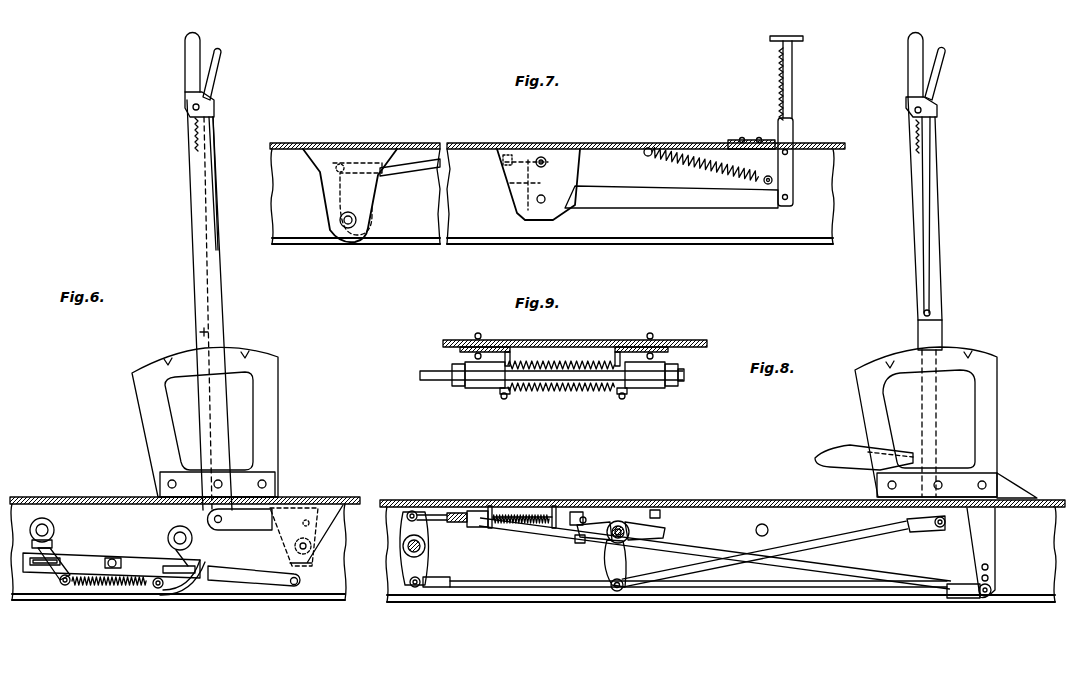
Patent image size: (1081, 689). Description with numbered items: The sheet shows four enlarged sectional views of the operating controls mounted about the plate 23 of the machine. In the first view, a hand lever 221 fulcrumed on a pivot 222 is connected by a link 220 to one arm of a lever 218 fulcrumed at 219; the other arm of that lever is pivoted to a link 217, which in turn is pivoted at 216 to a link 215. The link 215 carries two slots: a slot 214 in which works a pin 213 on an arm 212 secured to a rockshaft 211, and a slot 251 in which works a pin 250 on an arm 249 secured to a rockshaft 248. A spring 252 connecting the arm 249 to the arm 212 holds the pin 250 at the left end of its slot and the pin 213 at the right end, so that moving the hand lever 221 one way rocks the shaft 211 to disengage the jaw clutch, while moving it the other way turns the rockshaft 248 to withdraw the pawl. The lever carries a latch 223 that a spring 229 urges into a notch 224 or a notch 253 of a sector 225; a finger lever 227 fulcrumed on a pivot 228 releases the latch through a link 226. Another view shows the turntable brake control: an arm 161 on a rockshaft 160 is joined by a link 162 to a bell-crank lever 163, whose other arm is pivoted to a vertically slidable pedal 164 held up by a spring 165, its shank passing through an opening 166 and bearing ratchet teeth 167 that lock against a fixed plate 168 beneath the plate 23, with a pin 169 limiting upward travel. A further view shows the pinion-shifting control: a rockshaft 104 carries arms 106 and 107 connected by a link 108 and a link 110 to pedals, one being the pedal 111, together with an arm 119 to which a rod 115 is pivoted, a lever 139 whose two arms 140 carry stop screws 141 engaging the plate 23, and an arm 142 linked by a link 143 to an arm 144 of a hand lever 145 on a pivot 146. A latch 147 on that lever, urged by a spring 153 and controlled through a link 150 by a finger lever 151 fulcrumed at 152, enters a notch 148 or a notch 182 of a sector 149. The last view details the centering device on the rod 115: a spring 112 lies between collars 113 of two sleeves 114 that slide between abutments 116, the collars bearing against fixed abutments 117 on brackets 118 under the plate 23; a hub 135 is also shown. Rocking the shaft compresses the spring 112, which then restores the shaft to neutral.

In FIG. 7, the plate 23 is at (621, 144).
In FIG. 9, the plate 23 is at (700, 343).
In FIG. 8, the plate 23 is at (776, 505).
In FIG. 8, the rockshaft 104 is at (421, 553).
In FIG. 8, the arm 106 is at (412, 510).
In FIG. 8, the arm 107 is at (413, 587).
In FIG. 8, the link 108 is at (676, 562).
In FIG. 8, the link 110 is at (495, 571).
In FIG. 8, the pedal 111 is at (846, 450).
In FIG. 9, the spring 112 is at (540, 390).
In FIG. 8, the spring 112 is at (522, 512).
In FIG. 9, the shoulders or collars 113 is at (507, 395).
In FIG. 9, the sleeves 114 is at (480, 388).
In FIG. 8, the sleeves 114 is at (480, 527).
In FIG. 9, the rod 115 is at (433, 370).
In FIG. 8, the rod 115 is at (458, 515).
In FIG. 9, the abutments 116 is at (455, 386).
In FIG. 8, the abutments 116 is at (466, 524).
In FIG. 9, the fixed abutments 117 is at (501, 398).
In FIG. 8, the fixed abutments 117 is at (565, 527).
In FIG. 9, the brackets 118 is at (510, 348).
In FIG. 8, the brackets 118 is at (556, 510).
In FIG. 8, the arm 119 is at (407, 530).
In FIG. 8, the shaft 135 is at (628, 525).
In FIG. 8, the lever 139 is at (620, 521).
In FIG. 8, the arms 140 is at (661, 538).
In FIG. 8, the stop screw 141 is at (583, 517).
In FIG. 8, the arm 142 is at (607, 570).
In FIG. 8, the link 143 is at (820, 558).
In FIG. 8, the arm 144 is at (945, 528).
In FIG. 8, the hand lever 145 is at (908, 48).
In FIG. 8, the pivot 146 is at (940, 484).
In FIG. 8, the latch 147 is at (931, 315).
In FIG. 8, the notch 148 is at (968, 357).
In FIG. 8, the sector 149 is at (990, 373).
In FIG. 8, the link 150 is at (938, 161).
In FIG. 8, the finger lever 151 is at (942, 62).
In FIG. 8, the fulcrum 152 is at (913, 109).
In FIG. 8, the spring 153 is at (915, 129).
In FIG. 7, the rockshaft 160 is at (360, 225).
In FIG. 7, the arm 161 is at (330, 191).
In FIG. 7, the link 162 is at (412, 169).
In FIG. 7, the bell-crank lever 163 is at (530, 210).
In FIG. 7, the pedal 164 is at (788, 36).
In FIG. 7, the spring 165 is at (707, 163).
In FIG. 7, the opening 166 is at (770, 144).
In FIG. 7, the ratchet teeth 167 is at (780, 96).
In FIG. 7, the fixed plate 168 is at (766, 177).
In FIG. 7, the pin 169 is at (790, 158).
In FIG. 8, the notch 182 is at (890, 362).
In FIG. 6, the rockshaft 211 is at (42, 528).
In FIG. 6, the arm 212 is at (65, 585).
In FIG. 6, the pin 213 is at (68, 563).
In FIG. 6, the slot 214 is at (35, 571).
In FIG. 6, the link 215 is at (92, 566).
In FIG. 6, the pivot 216 is at (115, 563).
In FIG. 6, the link 217 is at (262, 576).
In FIG. 6, the lever 218 is at (298, 583).
In FIG. 6, the fulcrum 219 is at (300, 560).
In FIG. 6, the link 220 is at (250, 525).
In FIG. 6, the hand lever 221 is at (190, 47).
In FIG. 6, the pivot 222 is at (222, 484).
In FIG. 6, the latch 223 is at (215, 336).
In FIG. 6, the notch 224 is at (168, 356).
In FIG. 6, the sector 225 is at (147, 368).
In FIG. 6, the link 226 is at (215, 133).
In FIG. 6, the finger lever 227 is at (220, 62).
In FIG. 6, the pivot 228 is at (192, 108).
In FIG. 6, the spring 229 is at (196, 131).
In FIG. 6, the rockshaft 248 is at (178, 538).
In FIG. 6, the arm 249 is at (160, 588).
In FIG. 6, the pin 250 is at (190, 567).
In FIG. 6, the slot 251 is at (190, 577).
In FIG. 6, the spring 252 is at (118, 590).
In FIG. 6, the notch 253 is at (250, 354).